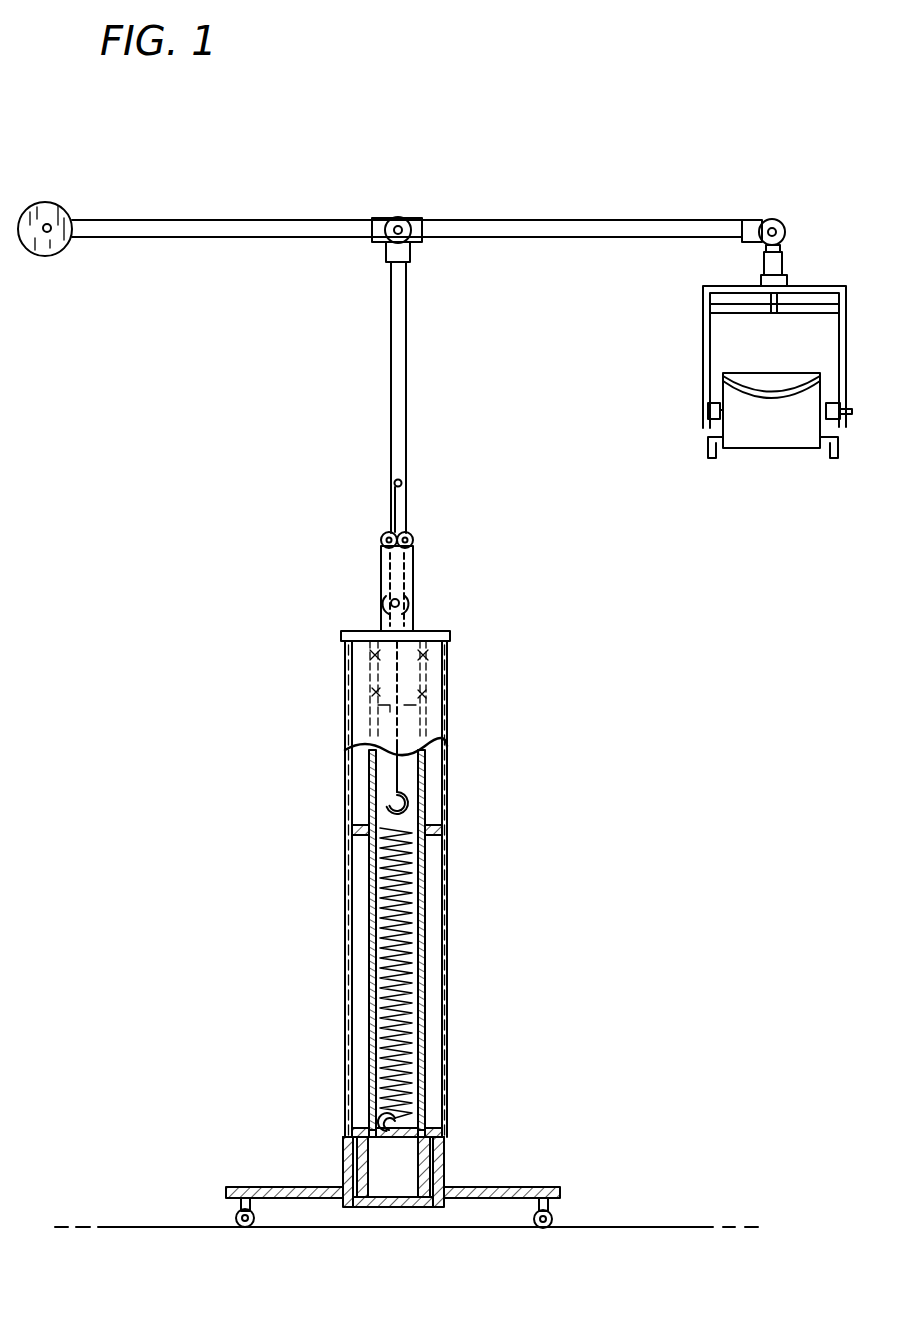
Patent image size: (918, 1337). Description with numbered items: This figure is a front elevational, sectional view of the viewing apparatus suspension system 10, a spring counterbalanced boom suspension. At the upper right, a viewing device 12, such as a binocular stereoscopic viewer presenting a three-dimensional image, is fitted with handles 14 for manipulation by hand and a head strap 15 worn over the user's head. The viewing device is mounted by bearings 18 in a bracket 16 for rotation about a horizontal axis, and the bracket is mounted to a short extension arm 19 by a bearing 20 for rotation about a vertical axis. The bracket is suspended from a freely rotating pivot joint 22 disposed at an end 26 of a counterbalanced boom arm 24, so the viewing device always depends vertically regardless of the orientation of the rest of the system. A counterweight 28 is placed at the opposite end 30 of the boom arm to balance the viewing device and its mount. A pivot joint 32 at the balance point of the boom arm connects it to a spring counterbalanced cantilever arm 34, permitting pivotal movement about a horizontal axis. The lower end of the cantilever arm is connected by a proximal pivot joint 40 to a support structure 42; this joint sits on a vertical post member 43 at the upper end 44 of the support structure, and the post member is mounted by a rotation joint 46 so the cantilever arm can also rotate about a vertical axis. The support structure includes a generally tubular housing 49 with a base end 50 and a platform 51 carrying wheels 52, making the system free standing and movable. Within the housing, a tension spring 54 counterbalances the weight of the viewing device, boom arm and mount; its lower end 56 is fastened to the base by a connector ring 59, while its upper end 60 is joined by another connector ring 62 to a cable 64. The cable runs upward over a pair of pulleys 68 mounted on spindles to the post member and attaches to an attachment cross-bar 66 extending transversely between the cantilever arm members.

The viewing apparatus suspension system 10 is at (636, 141).
The viewing device 12 is at (752, 448).
The handles 14 is at (706, 445).
The head strap 15 is at (770, 385).
The bracket 16 is at (702, 348).
The bearings 18 is at (708, 408).
The short extension arm 19 is at (784, 262).
The bearing 20 is at (762, 281).
The pivot joint 22 is at (770, 218).
The boom arm 24 is at (520, 219).
The end of boom arm 26 is at (740, 218).
The counterweight 28 is at (46, 203).
The opposite end of boom arm 30 is at (128, 195).
The pivot joint 32 is at (398, 216).
The cantilever arm 34 is at (407, 330).
The proximal pivot joint 40 is at (391, 603).
The support structure 42 is at (463, 706).
The vertical post member 43 is at (414, 578).
The upper end of support structure 44 is at (430, 631).
The rotation joint 46 is at (376, 648).
The tubular housing 49 is at (344, 935).
The base end 50 is at (338, 1152).
The platform 51 is at (494, 1187).
The wheels 52 is at (236, 1219).
The tension spring 54 is at (416, 996).
The lower end of spring 56 is at (416, 1096).
The connector ring 59 is at (386, 1125).
The upper end of spring 60 is at (403, 857).
The connector ring 62 is at (414, 805).
The cable 64 is at (392, 490).
The attachment cross-bar 66 is at (402, 483).
The pulleys 68 is at (381, 540).